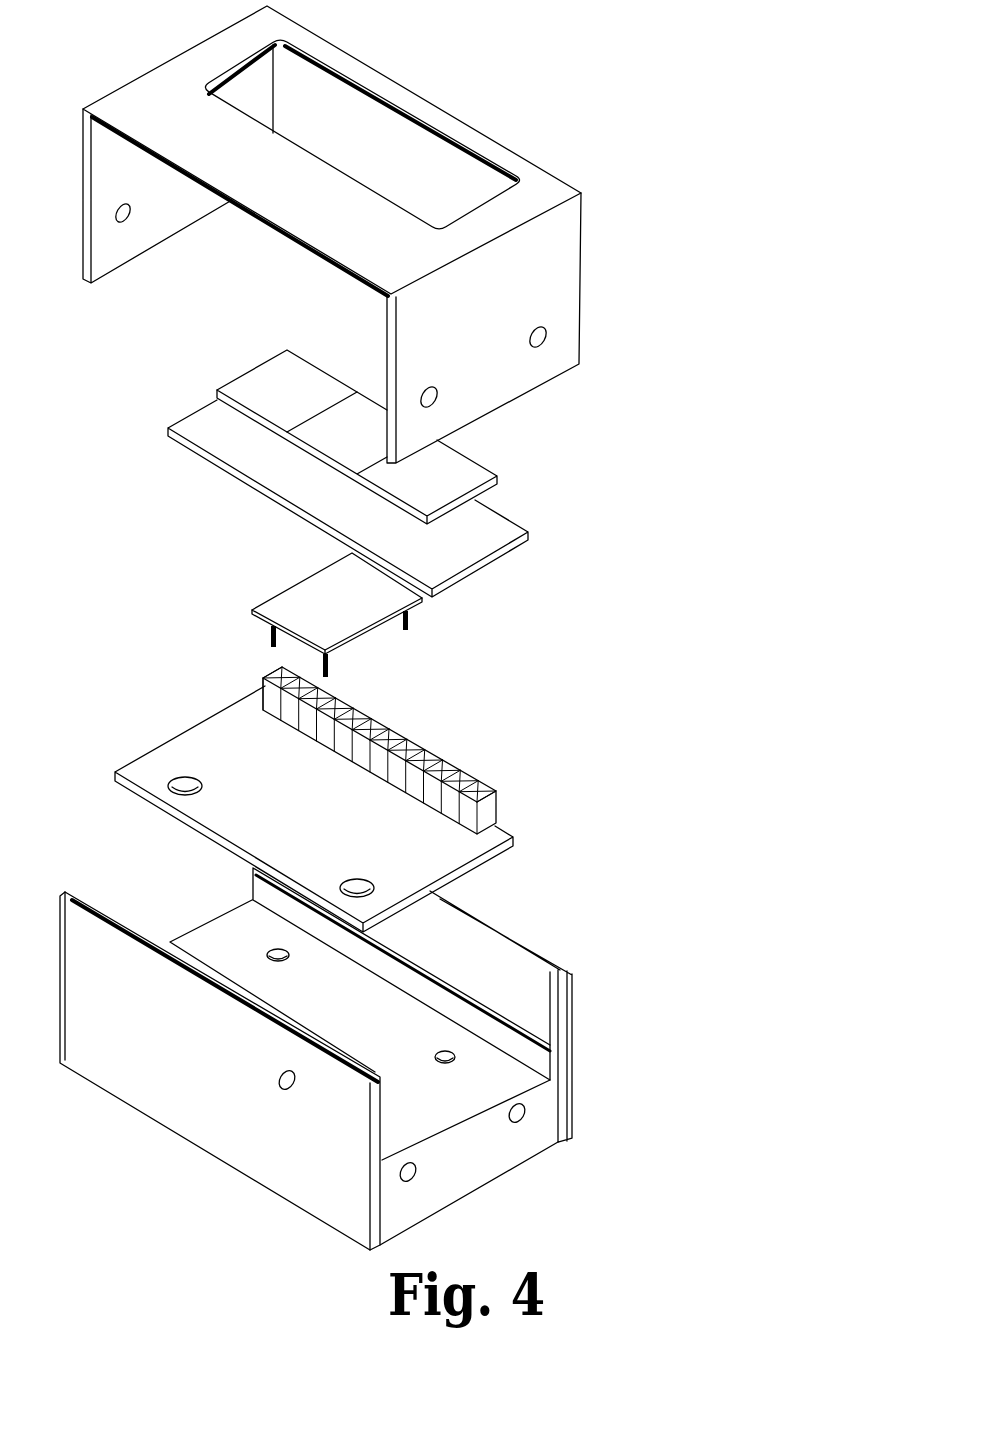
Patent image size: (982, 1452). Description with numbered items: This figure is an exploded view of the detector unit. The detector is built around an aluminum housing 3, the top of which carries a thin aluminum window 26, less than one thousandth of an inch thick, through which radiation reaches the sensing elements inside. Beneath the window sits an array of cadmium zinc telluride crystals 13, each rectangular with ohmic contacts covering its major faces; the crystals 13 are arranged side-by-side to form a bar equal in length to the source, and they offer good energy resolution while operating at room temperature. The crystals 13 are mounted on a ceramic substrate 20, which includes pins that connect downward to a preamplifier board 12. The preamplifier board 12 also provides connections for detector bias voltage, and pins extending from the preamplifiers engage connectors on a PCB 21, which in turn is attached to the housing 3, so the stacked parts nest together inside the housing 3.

The aluminum housing 3 is at (563, 307).
The thin aluminum window 26 is at (382, 140).
The cadmium zinc telluride crystals 13 is at (463, 468).
The ceramic substrate 20 is at (480, 541).
The preamplifier board 12 is at (335, 625).
The PCB 21 is at (398, 878).